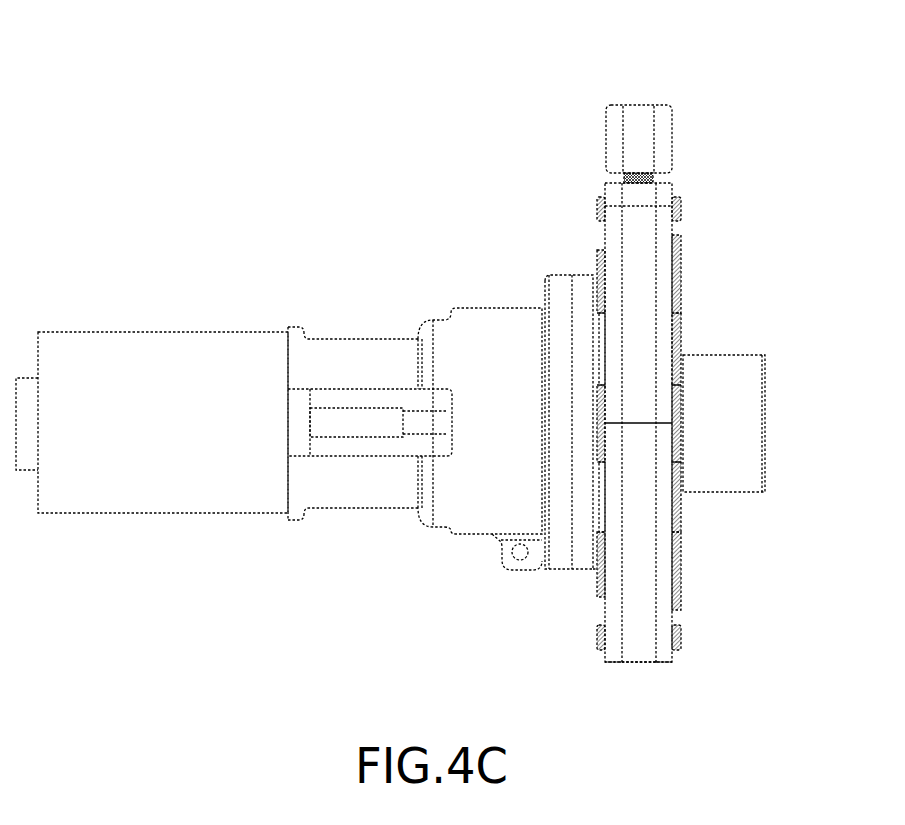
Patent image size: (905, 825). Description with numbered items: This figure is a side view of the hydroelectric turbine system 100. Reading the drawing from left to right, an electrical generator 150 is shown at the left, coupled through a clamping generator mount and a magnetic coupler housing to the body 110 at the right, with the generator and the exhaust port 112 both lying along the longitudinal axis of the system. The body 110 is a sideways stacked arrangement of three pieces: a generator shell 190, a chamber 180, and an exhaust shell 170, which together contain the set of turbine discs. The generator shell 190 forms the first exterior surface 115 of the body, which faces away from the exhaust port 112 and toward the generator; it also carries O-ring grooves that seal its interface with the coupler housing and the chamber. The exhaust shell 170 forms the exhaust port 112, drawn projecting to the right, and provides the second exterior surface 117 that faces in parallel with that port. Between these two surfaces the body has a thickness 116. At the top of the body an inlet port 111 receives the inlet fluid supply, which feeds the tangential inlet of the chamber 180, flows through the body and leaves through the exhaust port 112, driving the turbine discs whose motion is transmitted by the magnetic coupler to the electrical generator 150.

The hydroelectric turbine system 100 is at (138, 125).
The body 110 is at (527, 598).
The inlet port 111 is at (640, 82).
The exhaust port 112 is at (767, 410).
The first exterior surface 115 is at (597, 229).
The thickness 116 is at (643, 580).
The second exterior surface 117 is at (678, 228).
The electrical generator 150 is at (140, 485).
The exhaust shell 170 is at (663, 665).
The chamber 180 is at (637, 665).
The generator shell 190 is at (612, 667).